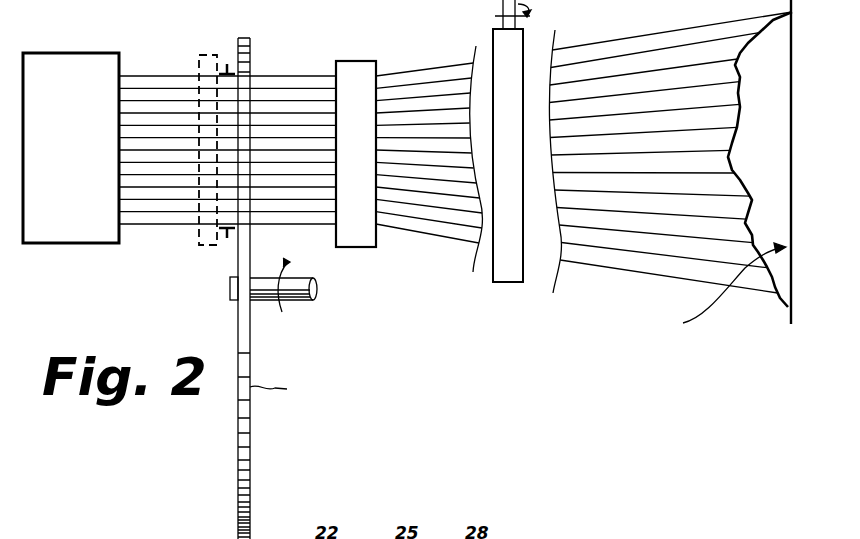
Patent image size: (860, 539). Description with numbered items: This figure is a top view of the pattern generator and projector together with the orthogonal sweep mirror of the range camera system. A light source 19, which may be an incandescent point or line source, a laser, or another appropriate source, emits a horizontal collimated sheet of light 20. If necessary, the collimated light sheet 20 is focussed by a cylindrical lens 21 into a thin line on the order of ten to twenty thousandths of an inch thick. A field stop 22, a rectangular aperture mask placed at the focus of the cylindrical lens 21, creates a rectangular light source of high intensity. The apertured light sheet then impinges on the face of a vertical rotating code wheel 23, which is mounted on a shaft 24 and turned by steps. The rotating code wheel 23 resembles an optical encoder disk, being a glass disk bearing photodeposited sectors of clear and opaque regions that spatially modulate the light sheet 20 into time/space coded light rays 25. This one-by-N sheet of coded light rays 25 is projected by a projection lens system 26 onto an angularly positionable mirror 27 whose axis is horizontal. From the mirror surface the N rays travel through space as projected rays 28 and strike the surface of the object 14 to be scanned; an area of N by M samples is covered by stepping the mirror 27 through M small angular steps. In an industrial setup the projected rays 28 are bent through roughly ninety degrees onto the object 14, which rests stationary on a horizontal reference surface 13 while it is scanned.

The horizontal reference surface 13 is at (791, 322).
The object 14 is at (740, 53).
The light source 19 is at (85, 58).
The collimated sheet of light 20 is at (168, 76).
The cylindrical lens 21 is at (197, 237).
The field stop 22 is at (228, 64).
The rotating code wheel 23 is at (238, 418).
The shaft 24 is at (303, 300).
The coded light rays 25 is at (298, 74).
The projection lens system 26 is at (357, 247).
The angularly positionable mirror 27 is at (504, 283).
The projected rays 28 is at (630, 270).